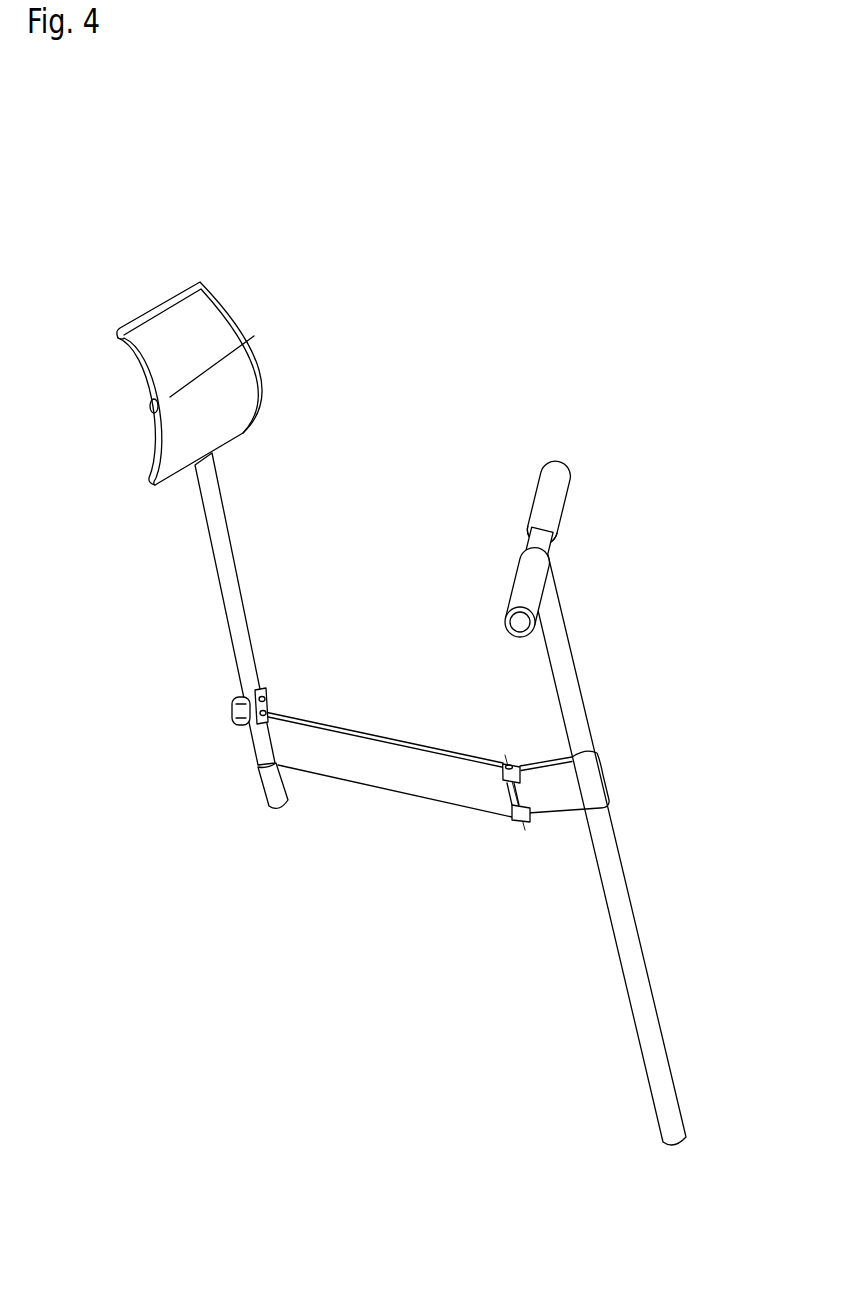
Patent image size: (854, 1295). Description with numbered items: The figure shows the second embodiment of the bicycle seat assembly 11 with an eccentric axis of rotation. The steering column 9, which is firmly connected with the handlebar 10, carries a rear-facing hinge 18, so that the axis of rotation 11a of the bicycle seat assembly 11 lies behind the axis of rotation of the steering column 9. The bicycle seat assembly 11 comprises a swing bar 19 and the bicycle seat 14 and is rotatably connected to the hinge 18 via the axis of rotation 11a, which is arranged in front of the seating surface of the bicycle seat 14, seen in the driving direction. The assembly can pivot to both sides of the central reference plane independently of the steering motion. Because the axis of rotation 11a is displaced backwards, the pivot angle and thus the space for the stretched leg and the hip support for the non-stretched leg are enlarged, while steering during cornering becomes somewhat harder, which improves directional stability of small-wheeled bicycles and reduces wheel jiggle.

The steering column 9 is at (625, 910).
The handlebar 10 is at (548, 502).
The bicycle seat assembly 11 is at (455, 722).
The axis of rotation 11a is at (523, 822).
The bicycle seat 14 is at (203, 358).
The hinge 18 is at (560, 785).
The swing bar 19 is at (372, 757).